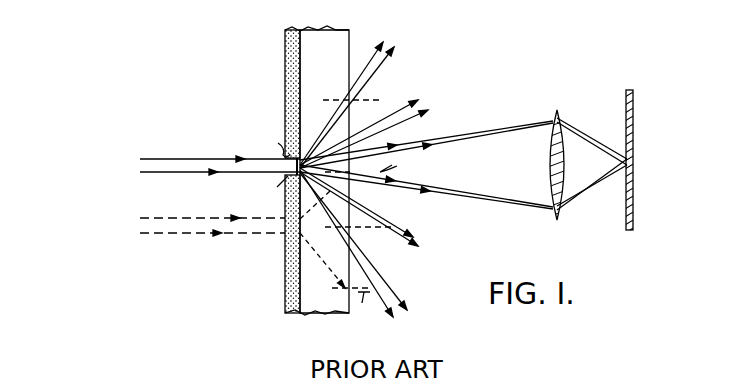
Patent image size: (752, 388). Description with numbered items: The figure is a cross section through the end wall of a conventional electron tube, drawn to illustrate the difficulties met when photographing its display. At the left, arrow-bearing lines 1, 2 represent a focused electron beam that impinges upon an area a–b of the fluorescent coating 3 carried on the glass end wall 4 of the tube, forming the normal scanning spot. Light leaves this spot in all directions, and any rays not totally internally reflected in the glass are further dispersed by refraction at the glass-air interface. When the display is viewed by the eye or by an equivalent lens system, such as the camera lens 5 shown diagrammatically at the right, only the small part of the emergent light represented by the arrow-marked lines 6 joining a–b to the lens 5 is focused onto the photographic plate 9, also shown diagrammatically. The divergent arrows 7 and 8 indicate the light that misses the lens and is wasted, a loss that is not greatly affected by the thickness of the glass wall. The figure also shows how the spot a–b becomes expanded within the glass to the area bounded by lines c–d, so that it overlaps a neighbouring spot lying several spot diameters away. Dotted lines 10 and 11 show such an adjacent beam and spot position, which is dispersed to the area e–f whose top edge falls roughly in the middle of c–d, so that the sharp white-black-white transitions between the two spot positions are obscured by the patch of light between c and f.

The arrow-bearing line 1 is at (180, 158).
The arrow-bearing line 2 is at (195, 173).
The fluorescent coating 3 is at (287, 274).
The glass end wall 4 is at (322, 300).
The camera lens 5 is at (560, 135).
The arrow-marked lines 6 is at (500, 166).
The divergent arrows 7 is at (401, 30).
The divergent arrows 8 is at (434, 94).
The photographic plate 9 is at (634, 150).
The dotted line 10 is at (197, 217).
The dotted line 11 is at (158, 234).